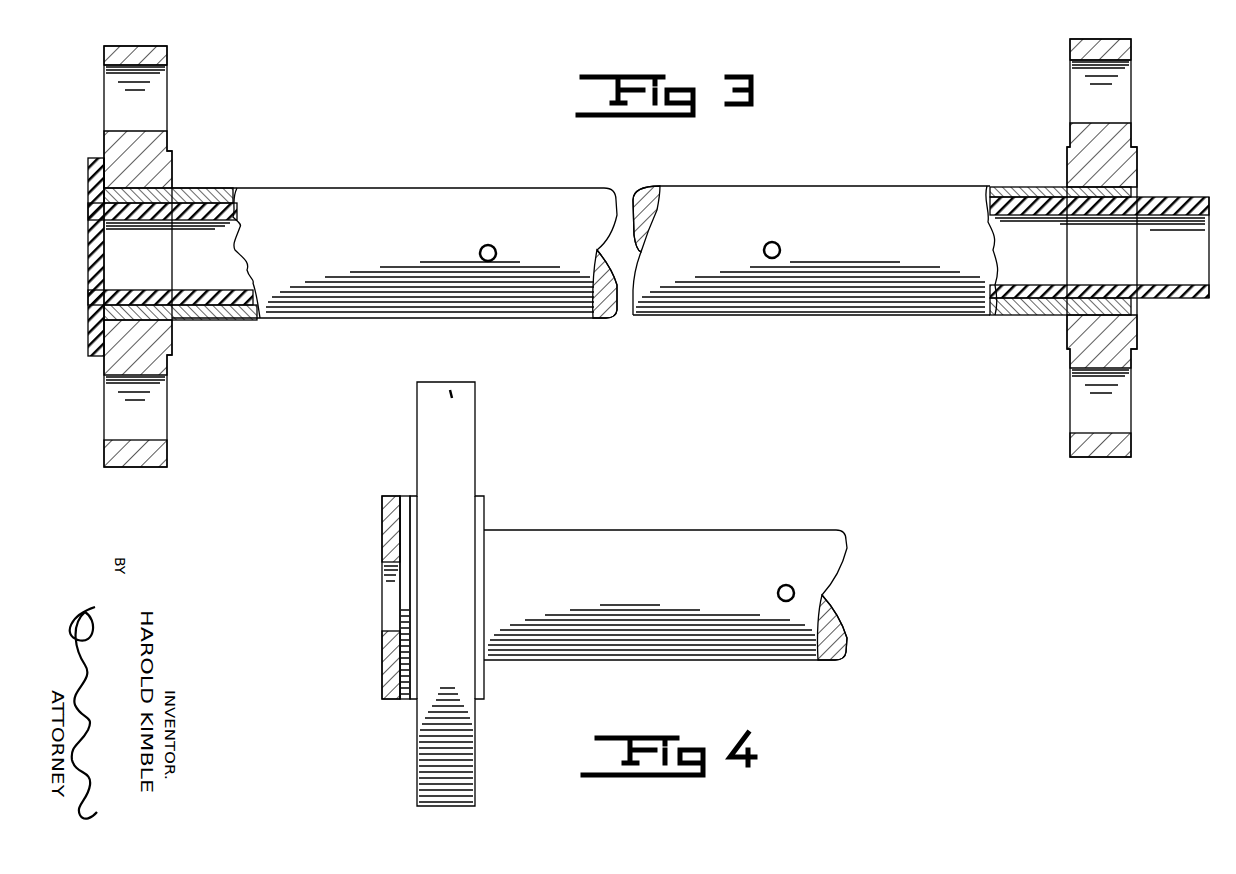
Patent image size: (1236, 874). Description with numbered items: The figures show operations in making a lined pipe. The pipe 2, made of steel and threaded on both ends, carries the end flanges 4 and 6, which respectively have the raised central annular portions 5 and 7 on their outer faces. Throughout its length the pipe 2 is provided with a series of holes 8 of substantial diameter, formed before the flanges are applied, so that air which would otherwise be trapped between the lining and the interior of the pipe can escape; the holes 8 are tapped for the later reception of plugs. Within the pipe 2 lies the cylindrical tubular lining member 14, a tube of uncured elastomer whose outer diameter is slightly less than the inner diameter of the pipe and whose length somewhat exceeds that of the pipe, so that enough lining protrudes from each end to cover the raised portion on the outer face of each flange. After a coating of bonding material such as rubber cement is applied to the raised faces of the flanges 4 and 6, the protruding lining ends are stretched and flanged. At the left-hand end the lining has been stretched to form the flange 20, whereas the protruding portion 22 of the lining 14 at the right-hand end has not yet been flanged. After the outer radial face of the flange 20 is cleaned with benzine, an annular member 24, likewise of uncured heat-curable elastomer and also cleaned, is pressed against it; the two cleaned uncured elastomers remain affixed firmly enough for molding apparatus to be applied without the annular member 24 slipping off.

In FIG. 3, the pipe 2 is at (392, 188).
In FIG. 4, the pipe 2 is at (690, 530).
In FIG. 3, the end flange 4 is at (1131, 46).
In FIG. 3, the raised central annular portion 5 is at (1137, 155).
In FIG. 3, the end flange 6 is at (170, 134).
In FIG. 4, the end flange 6 is at (478, 452).
In FIG. 3, the raised central annular portion 7 is at (88, 172).
In FIG. 4, the raised central annular portion 7 is at (403, 699).
In FIG. 3, the holes 8 is at (497, 252).
In FIG. 4, the holes 8 is at (795, 589).
In FIG. 3, the cylindrical tubular lining member 14 is at (233, 320).
In FIG. 3, the flange 20 is at (94, 356).
In FIG. 4, the flange 20 is at (407, 496).
In FIG. 3, the protruding portion 22 is at (1166, 187).
In FIG. 4, the annular member 24 is at (383, 680).